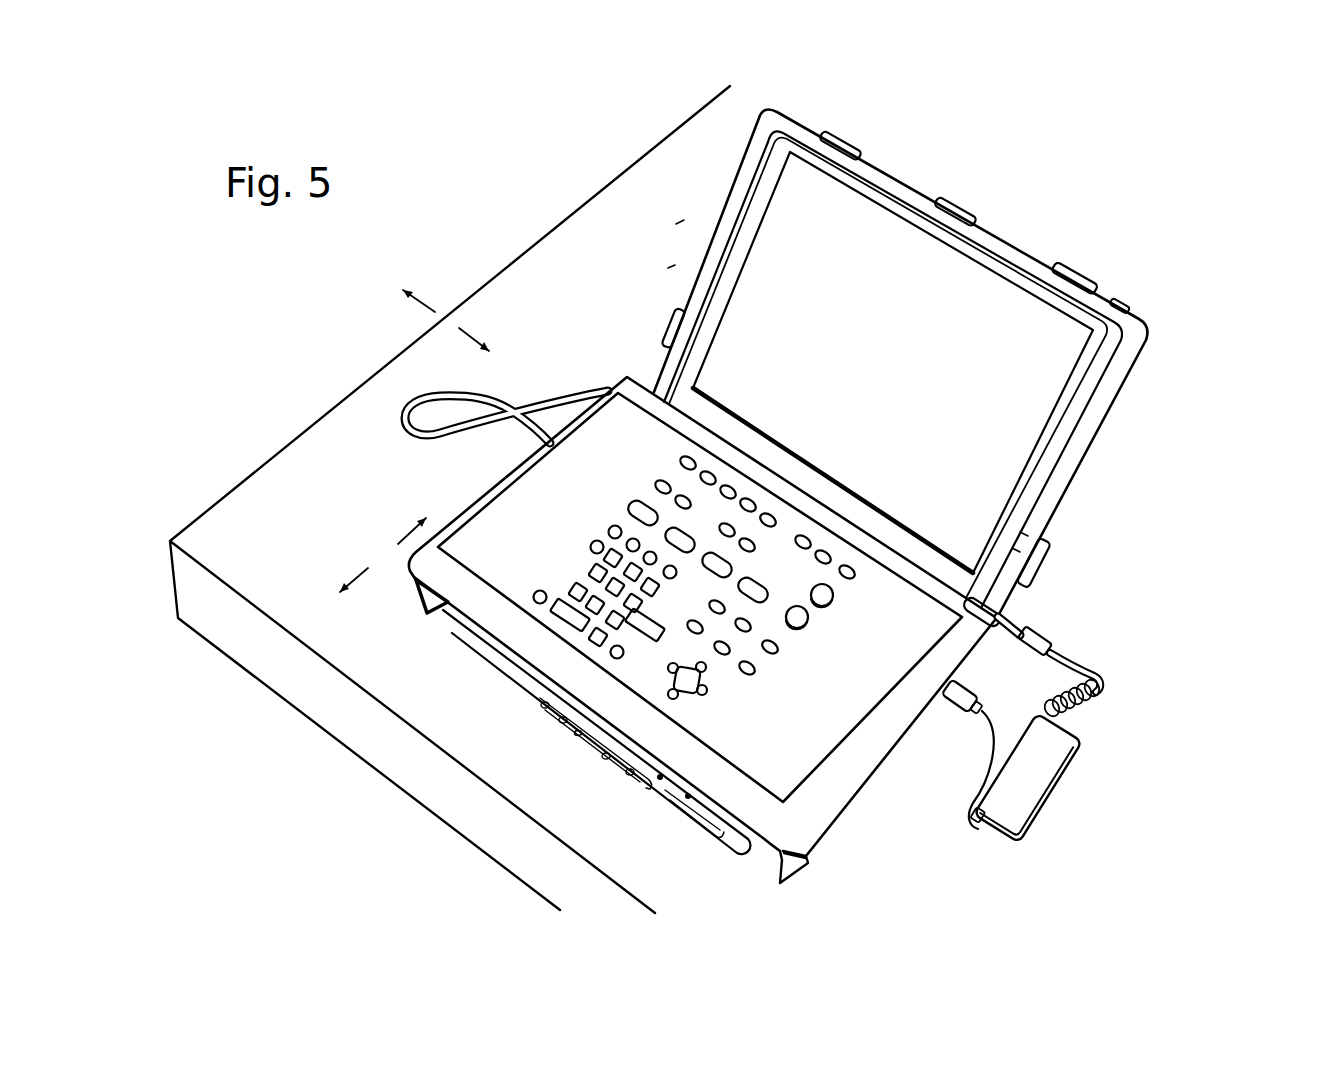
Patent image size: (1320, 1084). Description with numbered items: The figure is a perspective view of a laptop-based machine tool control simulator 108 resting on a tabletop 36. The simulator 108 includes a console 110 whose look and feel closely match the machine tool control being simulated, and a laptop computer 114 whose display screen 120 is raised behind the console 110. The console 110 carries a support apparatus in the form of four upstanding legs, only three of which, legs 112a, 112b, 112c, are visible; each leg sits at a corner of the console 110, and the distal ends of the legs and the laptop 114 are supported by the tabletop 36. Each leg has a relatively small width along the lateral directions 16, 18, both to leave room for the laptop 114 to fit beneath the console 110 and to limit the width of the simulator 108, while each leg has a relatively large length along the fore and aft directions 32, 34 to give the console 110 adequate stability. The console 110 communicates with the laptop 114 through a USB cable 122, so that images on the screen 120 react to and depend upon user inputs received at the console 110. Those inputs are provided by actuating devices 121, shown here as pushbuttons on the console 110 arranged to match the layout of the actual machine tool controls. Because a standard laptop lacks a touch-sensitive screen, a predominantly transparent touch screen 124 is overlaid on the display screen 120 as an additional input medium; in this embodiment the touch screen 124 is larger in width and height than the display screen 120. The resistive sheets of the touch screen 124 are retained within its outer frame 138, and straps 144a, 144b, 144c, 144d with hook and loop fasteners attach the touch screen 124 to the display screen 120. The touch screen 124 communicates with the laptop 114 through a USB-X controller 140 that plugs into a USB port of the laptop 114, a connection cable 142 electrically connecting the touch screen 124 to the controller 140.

The lateral direction 16 is at (457, 336).
The lateral direction 18 is at (420, 310).
The fore and aft direction 32 is at (402, 537).
The fore and aft direction 34 is at (363, 570).
The tabletop 36 is at (591, 832).
The laptop-based machine tool control simulator 108 is at (1168, 519).
The console 110 is at (845, 708).
The leg 112a is at (421, 610).
The leg 112b is at (805, 860).
The leg 112c is at (990, 660).
The laptop computer 114 is at (508, 673).
The display screen 120 is at (750, 310).
The user-actuatable devices 121 is at (818, 740).
The USB cable 122 is at (436, 445).
The touch screen 124 is at (1078, 415).
The outer frame 138 is at (717, 232).
The USB-X controller 140 is at (1068, 783).
The connection cable 142 is at (1100, 688).
The strap 144a is at (663, 332).
The strap 144b is at (850, 133).
The strap 144c is at (1078, 272).
The strap 144d is at (1042, 570).